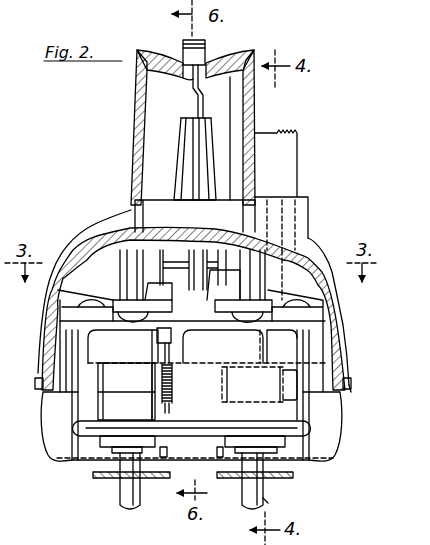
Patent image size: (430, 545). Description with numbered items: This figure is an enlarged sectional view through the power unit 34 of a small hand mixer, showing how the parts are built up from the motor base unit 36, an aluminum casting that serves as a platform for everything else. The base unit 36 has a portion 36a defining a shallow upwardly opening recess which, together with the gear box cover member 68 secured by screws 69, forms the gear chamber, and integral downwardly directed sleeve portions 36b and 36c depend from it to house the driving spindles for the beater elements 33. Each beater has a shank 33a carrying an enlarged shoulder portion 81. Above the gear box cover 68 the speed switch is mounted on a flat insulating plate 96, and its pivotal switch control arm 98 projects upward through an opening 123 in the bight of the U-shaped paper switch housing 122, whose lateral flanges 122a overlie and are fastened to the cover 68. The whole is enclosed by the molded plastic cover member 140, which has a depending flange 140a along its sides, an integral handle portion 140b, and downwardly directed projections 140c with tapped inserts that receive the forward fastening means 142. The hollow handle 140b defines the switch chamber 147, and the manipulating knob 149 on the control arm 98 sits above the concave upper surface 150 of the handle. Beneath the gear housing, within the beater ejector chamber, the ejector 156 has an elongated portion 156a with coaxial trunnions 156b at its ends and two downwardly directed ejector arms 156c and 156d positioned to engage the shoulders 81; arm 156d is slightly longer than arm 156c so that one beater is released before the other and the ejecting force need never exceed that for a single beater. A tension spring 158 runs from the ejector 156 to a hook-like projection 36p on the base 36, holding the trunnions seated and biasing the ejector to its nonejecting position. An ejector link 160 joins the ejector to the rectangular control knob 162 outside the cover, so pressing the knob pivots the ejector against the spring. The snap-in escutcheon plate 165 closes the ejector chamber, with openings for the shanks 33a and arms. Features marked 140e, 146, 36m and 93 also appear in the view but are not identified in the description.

The cover member 140 is at (100, 223).
The depending flange 140a is at (47, 337).
The handle portion 140b is at (137, 101).
The downwardly directed projections 140c is at (247, 278).
The housing portion 140e is at (8, 139).
The switch chamber 147 is at (253, 101).
The concave upper surface 150 is at (170, 62).
The manipulating knob 149 is at (206, 47).
The switch control arm 98 is at (200, 106).
The opening 146 is at (190, 82).
The opening 123 is at (195, 111).
The switch housing 122 is at (179, 157).
The insulating plate 96 is at (190, 136).
The control knob 162 is at (284, 146).
The lateral flanges 122a is at (188, 230).
The fastening means 142 is at (148, 308).
The gear box cover member 68 is at (273, 313).
The screws 69 is at (92, 300).
The power unit 34 is at (349, 346).
The motor base unit 36 is at (338, 421).
The motor housing end 36m is at (72, 410).
The gear housing portion 36a is at (123, 375).
The projection 36p is at (126, 391).
The sleeve portion 36b is at (126, 389).
The sleeve portion 36c is at (270, 419).
The tension spring 158 is at (171, 363).
The ejector link 160 is at (262, 338).
The ejector 156 is at (178, 406).
The elongated portion 156a is at (95, 447).
The trunnions 156b is at (60, 449).
The ejector arm 156c is at (161, 408).
The ejector arm 156d is at (225, 396).
The escutcheon plate 165 is at (310, 461).
The enlarged shoulder portion 81 is at (108, 479).
The beater elements 33 is at (122, 503).
The beater shank 33a is at (137, 498).
The shaft end 93 is at (268, 498).